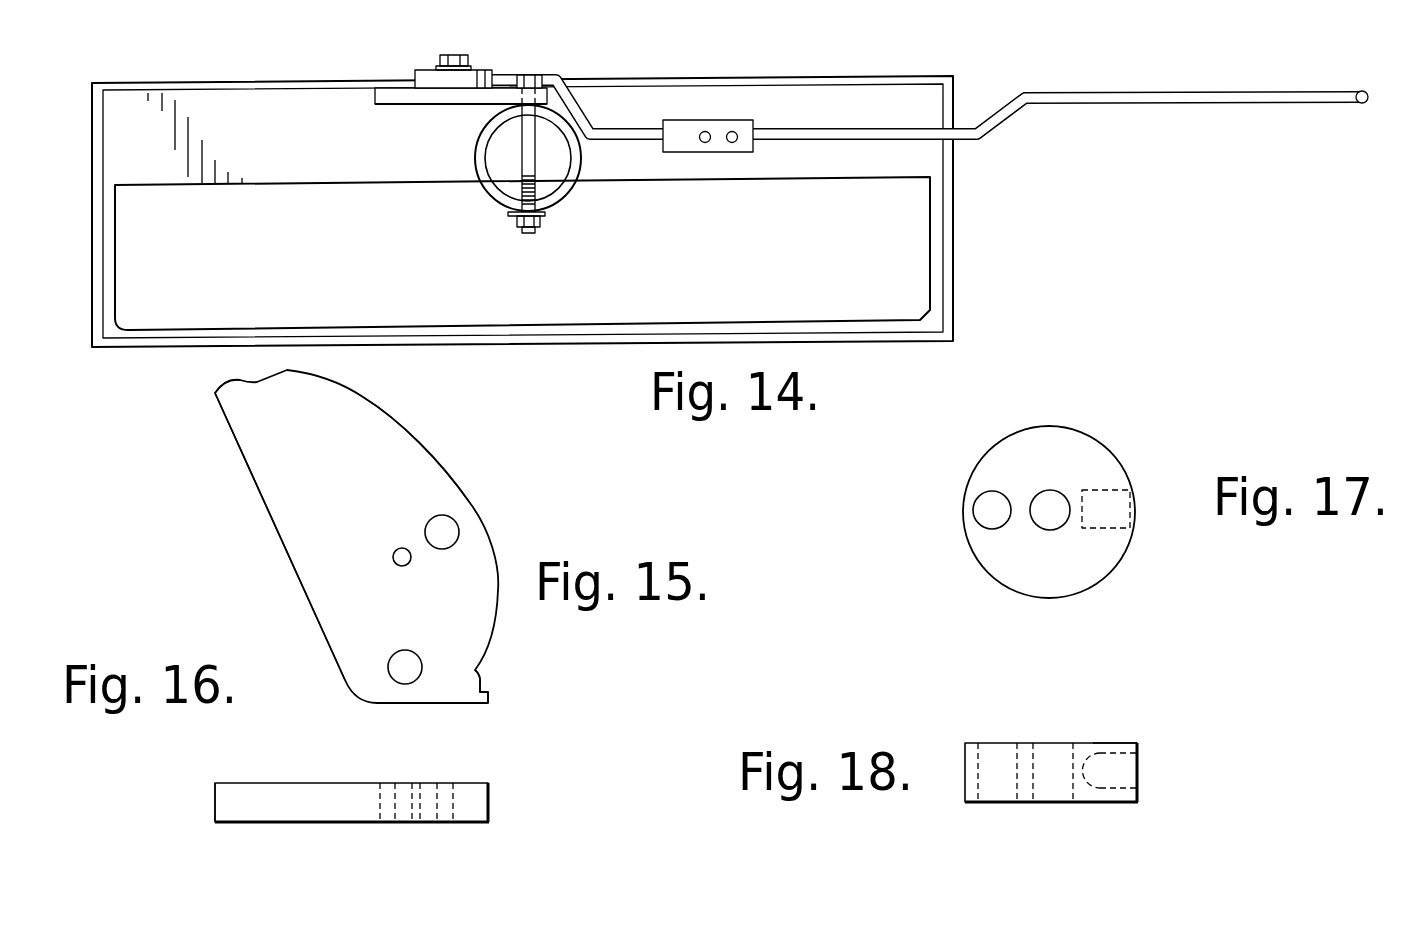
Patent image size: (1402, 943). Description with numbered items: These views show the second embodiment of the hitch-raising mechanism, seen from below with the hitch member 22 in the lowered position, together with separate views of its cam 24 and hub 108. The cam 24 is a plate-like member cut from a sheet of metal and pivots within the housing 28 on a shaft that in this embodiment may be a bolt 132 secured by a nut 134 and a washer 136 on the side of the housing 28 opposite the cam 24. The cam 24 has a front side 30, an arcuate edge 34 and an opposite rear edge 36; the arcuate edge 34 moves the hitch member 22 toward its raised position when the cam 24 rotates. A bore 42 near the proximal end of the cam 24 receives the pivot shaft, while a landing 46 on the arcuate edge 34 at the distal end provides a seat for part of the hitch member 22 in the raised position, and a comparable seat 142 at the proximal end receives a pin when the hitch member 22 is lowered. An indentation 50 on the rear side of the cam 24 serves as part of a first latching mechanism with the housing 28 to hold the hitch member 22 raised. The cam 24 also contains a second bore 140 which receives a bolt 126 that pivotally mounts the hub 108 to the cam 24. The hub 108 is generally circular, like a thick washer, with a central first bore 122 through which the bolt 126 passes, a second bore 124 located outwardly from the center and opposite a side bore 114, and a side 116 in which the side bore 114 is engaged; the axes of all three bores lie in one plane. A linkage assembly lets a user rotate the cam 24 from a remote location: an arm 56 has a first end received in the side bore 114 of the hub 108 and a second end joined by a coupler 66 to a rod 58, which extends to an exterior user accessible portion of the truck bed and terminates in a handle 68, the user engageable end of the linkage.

In FIG. 14, the hitch member 22 is at (553, 176).
In FIG. 14, the cam 24 is at (388, 97).
In FIG. 15, the cam 24 is at (338, 413).
In FIG. 16, the cam 24 is at (298, 790).
In FIG. 14, the housing 28 is at (490, 190).
In FIG. 15, the front side 30 is at (290, 477).
In FIG. 15, the arcuate edge 34 is at (427, 448).
In FIG. 16, the rear edge 36 is at (232, 803).
In FIG. 15, the bore 42 is at (400, 675).
In FIG. 16, the bore 42 is at (393, 820).
In FIG. 15, the landing 46 is at (238, 378).
In FIG. 15, the indentation 50 is at (394, 557).
In FIG. 16, the indentation 50 is at (398, 790).
In FIG. 14, the arm 56 is at (585, 112).
In FIG. 14, the rod 58 is at (1122, 92).
In FIG. 14, the coupler 66 is at (702, 125).
In FIG. 14, the handle 68 is at (1362, 103).
In FIG. 14, the hub 108 is at (478, 76).
In FIG. 17, the hub 108 is at (1105, 475).
In FIG. 18, the hub 108 is at (1083, 790).
In FIG. 17, the side bore 114 is at (1125, 513).
In FIG. 18, the side bore 114 is at (1117, 787).
In FIG. 18, the side 116 is at (1093, 750).
In FIG. 17, the first bore 122 is at (1051, 498).
In FIG. 18, the first bore 122 is at (1073, 760).
In FIG. 17, the second bore 124 is at (980, 503).
In FIG. 18, the second bore 124 is at (1017, 762).
In FIG. 14, the bolt 126 is at (455, 55).
In FIG. 14, the bolt 132 is at (535, 232).
In FIG. 14, the nut 134 is at (515, 224).
In FIG. 14, the washer 136 is at (555, 214).
In FIG. 15, the second bore 140 is at (452, 531).
In FIG. 16, the second bore 140 is at (437, 805).
In FIG. 15, the seat 142 is at (478, 682).